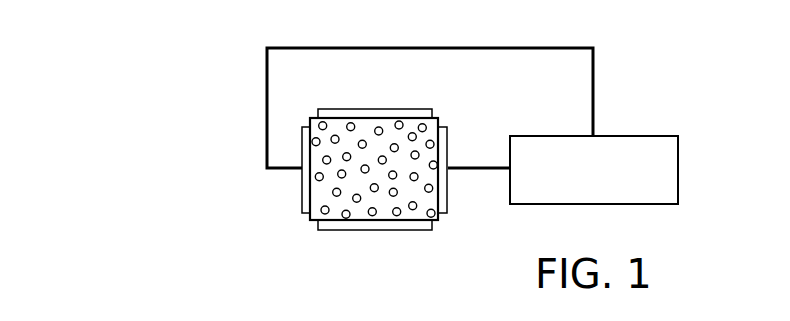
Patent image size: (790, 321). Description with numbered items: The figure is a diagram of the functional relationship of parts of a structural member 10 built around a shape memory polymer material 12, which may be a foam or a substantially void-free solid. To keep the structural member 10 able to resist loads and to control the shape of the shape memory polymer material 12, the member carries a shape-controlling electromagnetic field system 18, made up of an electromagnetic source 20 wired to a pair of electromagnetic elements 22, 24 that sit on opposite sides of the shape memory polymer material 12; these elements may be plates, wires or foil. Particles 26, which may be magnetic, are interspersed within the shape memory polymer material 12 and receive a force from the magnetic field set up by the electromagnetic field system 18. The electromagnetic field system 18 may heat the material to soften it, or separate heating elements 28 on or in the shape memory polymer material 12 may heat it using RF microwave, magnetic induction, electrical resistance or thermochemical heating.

The structural member 10 is at (197, 78).
The shape memory polymer material 12 is at (332, 215).
The electromagnetic field system 18 is at (617, 93).
The electromagnetic source 20 is at (648, 136).
The electromagnetic element 22 is at (300, 195).
The electromagnetic element 24 is at (450, 210).
The particles 26 is at (357, 203).
The heating elements 28 is at (355, 108).